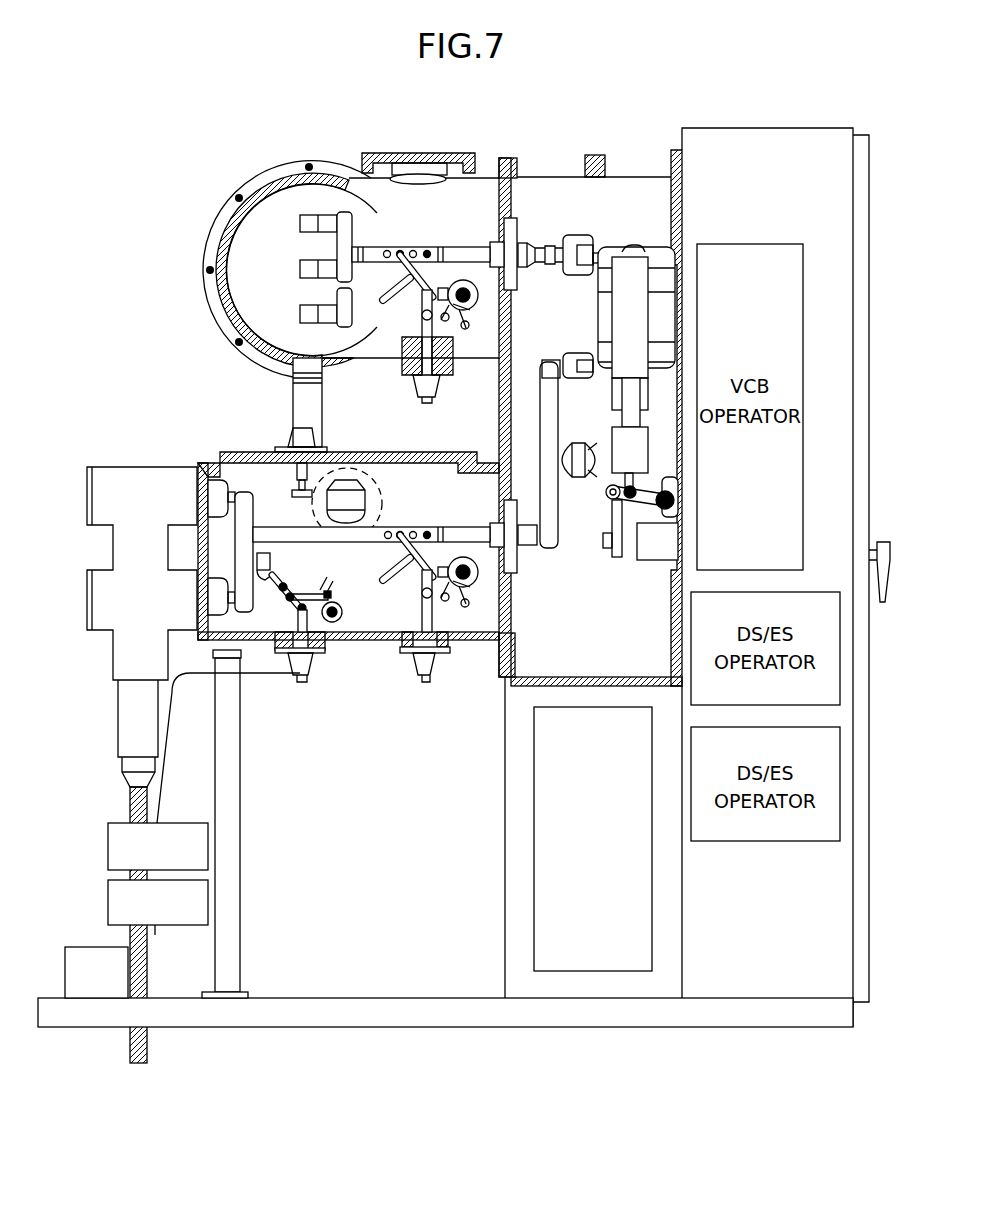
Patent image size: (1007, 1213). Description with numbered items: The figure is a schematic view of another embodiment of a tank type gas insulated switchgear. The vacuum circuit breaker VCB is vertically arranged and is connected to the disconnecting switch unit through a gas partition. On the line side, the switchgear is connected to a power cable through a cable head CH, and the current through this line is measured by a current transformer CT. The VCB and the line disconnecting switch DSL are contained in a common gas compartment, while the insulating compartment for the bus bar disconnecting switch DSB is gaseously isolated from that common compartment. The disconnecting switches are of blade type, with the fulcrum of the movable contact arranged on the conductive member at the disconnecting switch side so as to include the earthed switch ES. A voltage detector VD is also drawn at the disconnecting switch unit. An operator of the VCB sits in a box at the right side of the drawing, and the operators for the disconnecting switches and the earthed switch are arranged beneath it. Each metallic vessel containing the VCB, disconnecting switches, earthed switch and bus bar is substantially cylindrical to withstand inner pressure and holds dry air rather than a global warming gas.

The cable head CH is at (120, 627).
The current transformer CT is at (445, 925).
The voltage detector VD is at (284, 405).
The bus bar disconnecting switch DSB is at (395, 303).
The line disconnecting switch DSL is at (371, 589).
The earthed switch ES is at (305, 617).
The vacuum circuit breaker VCB is at (598, 382).